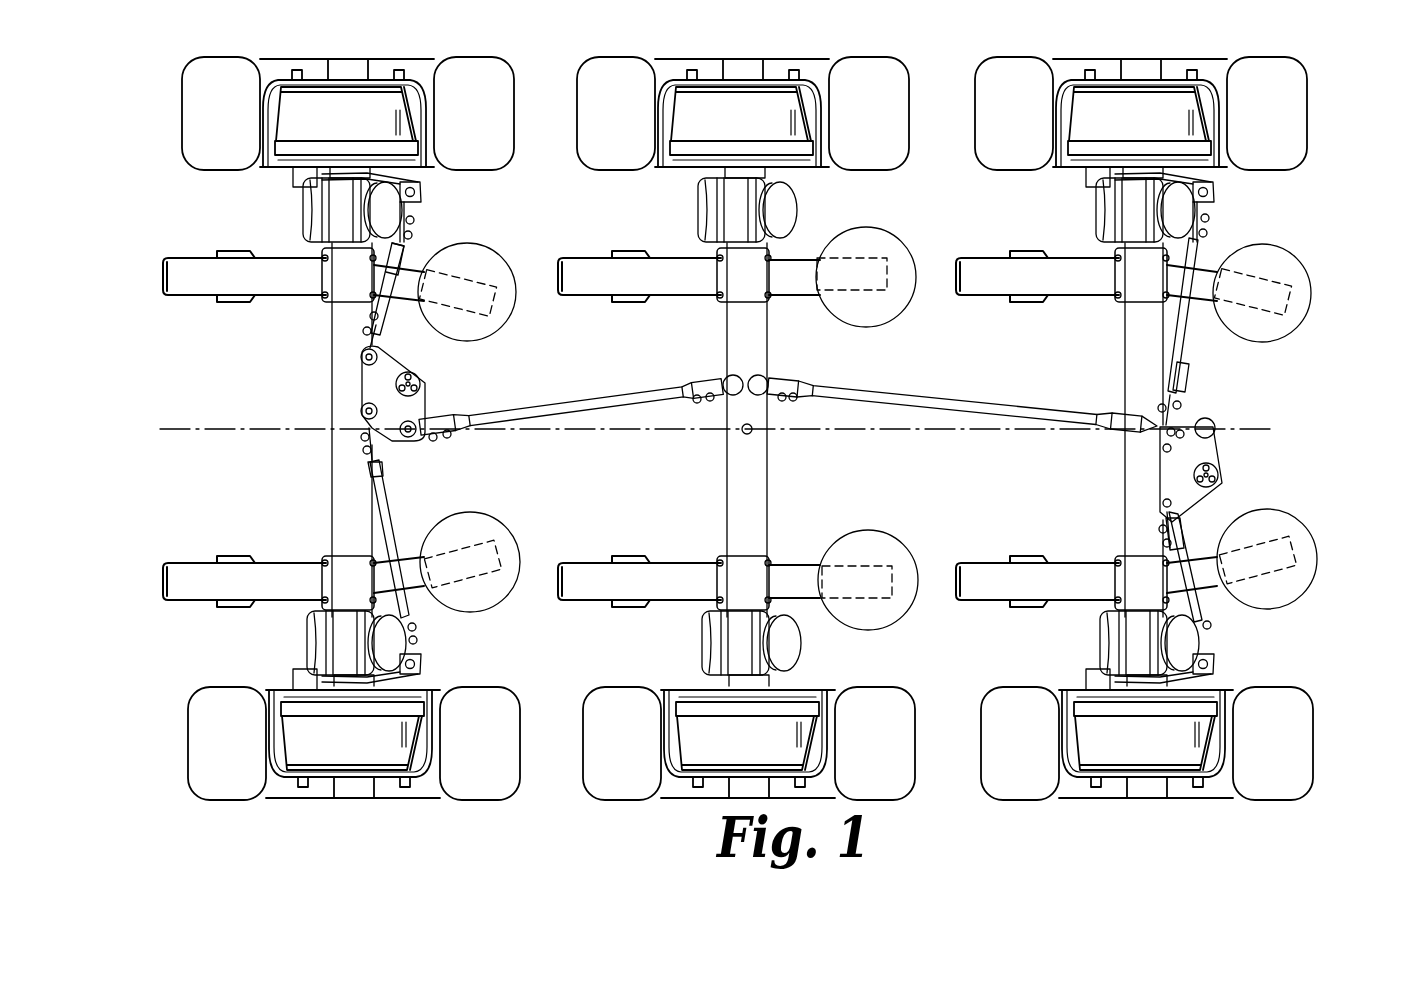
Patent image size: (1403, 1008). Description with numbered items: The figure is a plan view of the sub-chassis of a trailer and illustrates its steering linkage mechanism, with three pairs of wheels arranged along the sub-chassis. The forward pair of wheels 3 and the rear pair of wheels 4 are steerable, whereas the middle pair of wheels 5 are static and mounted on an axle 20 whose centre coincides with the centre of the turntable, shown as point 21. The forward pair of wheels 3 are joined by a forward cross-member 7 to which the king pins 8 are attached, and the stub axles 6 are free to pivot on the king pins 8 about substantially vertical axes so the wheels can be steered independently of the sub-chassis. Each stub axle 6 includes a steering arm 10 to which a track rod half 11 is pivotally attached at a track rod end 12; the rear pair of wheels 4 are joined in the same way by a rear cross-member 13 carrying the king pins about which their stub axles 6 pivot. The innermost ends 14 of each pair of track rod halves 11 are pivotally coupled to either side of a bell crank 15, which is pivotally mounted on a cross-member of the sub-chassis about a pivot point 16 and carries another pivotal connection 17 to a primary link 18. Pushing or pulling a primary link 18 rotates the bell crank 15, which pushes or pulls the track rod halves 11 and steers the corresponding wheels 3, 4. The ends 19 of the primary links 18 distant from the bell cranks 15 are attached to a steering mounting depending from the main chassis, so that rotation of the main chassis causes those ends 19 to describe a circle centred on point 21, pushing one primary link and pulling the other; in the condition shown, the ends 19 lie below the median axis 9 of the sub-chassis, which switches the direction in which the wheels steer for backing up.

The forward pair of wheels 3 is at (500, 62).
The rear pair of wheels 4 is at (1298, 62).
The middle pair of wheels 5 is at (892, 55).
The stub axle and king pin assembly 6 is at (312, 686).
The forward cross-member 7 is at (333, 348).
The king pin 8 is at (383, 175).
The median axis 9 is at (673, 432).
The steering arm 10 is at (1185, 176).
The track rod half 11 is at (402, 247).
The track rod end 12 is at (1215, 197).
The rear cross-member 13 is at (1132, 342).
The innermost end of track rod half 14 is at (385, 328).
The bell crank 15 is at (367, 388).
The pivot point 16 is at (421, 378).
The pivotal connection 17 is at (413, 443).
The primary link 18 is at (553, 405).
The end of primary link 19 is at (705, 386).
The axle 20 is at (755, 492).
The centre of the turntable 21 is at (752, 430).